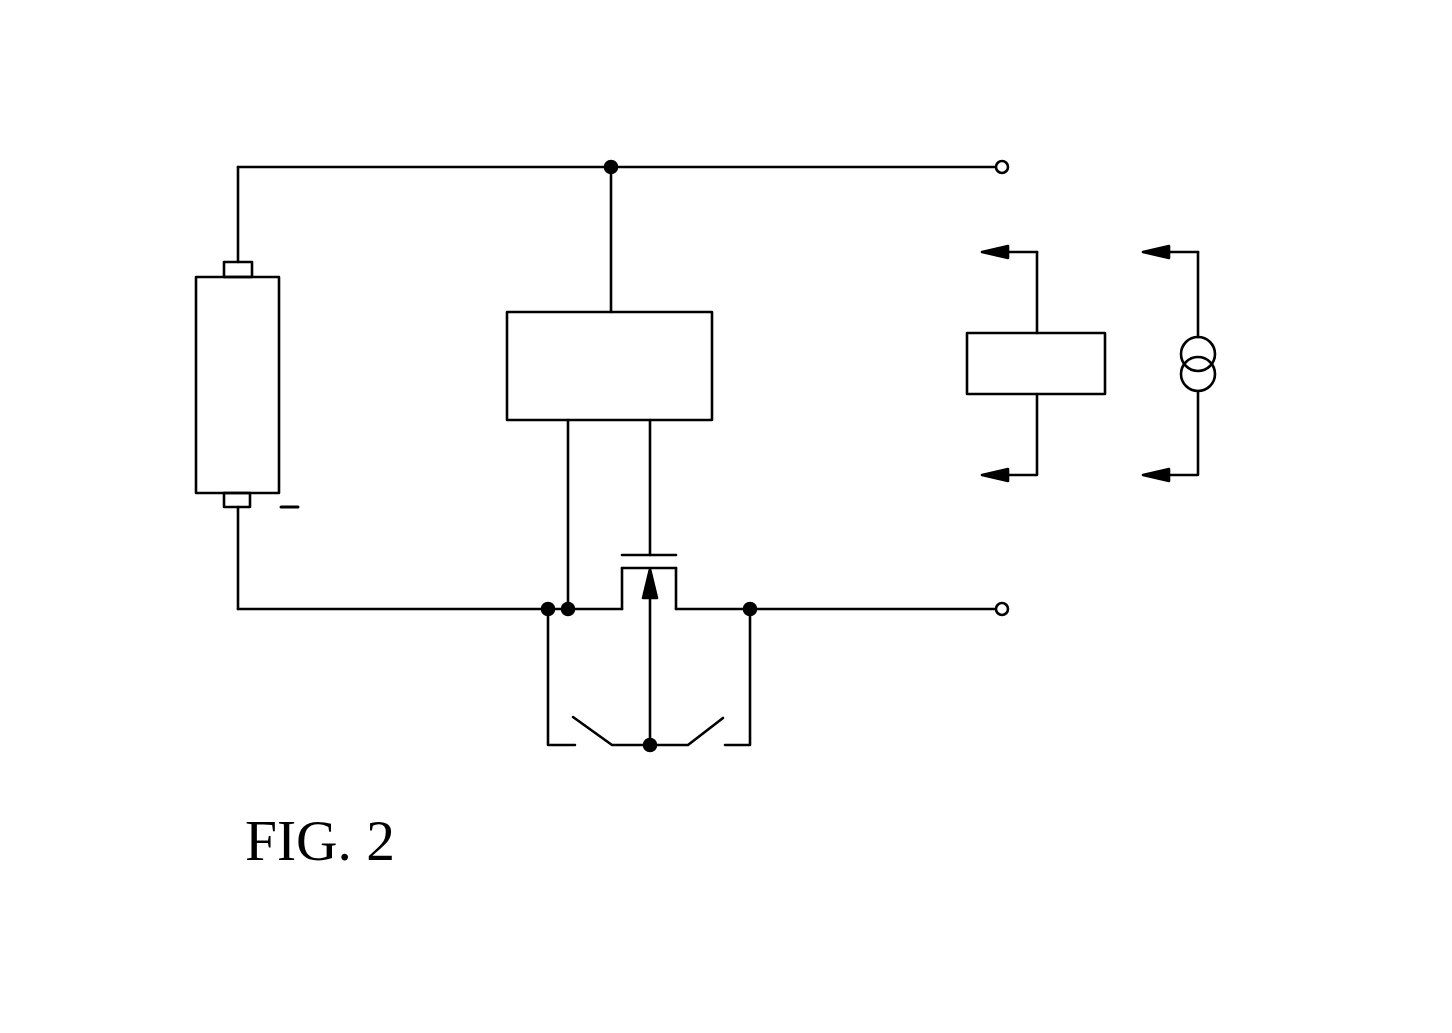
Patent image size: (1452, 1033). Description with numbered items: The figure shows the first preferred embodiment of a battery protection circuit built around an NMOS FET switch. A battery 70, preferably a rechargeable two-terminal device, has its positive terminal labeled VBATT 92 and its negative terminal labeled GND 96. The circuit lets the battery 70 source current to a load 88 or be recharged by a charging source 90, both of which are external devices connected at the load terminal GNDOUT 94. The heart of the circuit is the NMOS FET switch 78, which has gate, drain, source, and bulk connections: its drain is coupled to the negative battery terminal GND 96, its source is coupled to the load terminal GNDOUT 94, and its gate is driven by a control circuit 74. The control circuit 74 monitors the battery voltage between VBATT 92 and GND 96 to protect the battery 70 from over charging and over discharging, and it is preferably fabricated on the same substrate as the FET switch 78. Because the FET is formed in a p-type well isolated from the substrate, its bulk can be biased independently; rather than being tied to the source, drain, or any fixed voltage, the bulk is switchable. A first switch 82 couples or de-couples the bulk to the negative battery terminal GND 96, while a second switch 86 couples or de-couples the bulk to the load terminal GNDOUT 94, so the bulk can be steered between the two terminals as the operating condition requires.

The battery 70 is at (258, 461).
The control circuit 74 is at (697, 394).
The NMOS FET switch N1 78 is at (669, 555).
The first switch SW1 82 is at (596, 730).
The second switch SW2 86 is at (718, 728).
The load 88 is at (988, 387).
The charging source 90 is at (1211, 388).
The VBATT 92 is at (238, 190).
The load terminal GNDOUT 94 is at (907, 609).
The GND 96 is at (280, 609).